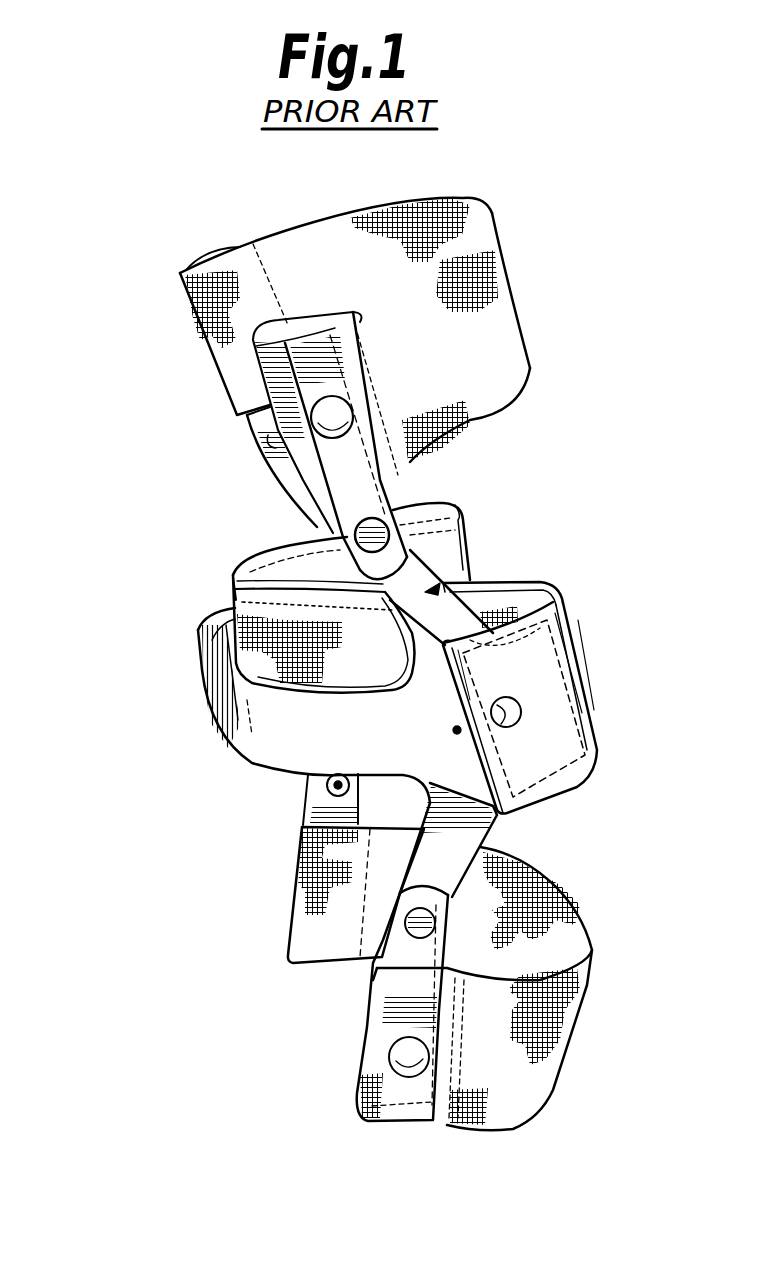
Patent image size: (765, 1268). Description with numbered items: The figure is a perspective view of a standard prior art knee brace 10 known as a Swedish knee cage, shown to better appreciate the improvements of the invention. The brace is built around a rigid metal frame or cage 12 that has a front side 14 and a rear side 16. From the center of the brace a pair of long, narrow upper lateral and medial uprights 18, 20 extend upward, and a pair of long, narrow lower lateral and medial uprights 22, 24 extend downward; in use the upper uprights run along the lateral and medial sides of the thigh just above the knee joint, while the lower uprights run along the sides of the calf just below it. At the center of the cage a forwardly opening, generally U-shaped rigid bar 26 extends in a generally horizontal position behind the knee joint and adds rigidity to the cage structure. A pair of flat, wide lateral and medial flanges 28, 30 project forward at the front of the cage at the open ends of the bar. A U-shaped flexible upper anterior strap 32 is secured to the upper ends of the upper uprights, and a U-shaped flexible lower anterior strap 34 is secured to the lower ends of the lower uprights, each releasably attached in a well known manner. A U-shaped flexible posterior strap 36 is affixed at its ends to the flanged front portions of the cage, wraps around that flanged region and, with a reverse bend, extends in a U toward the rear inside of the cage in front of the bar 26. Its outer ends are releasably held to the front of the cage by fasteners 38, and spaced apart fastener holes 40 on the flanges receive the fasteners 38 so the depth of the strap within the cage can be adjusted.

The knee brace 10 is at (552, 276).
The rigid metal frame or cage 12 is at (448, 582).
The front side 14 is at (606, 636).
The rear side 16 is at (176, 700).
The upper lateral upright 18 is at (396, 474).
The upper medial upright 20 is at (247, 414).
The lower lateral upright 22 is at (372, 1019).
The lower medial upright 24 is at (320, 800).
The U-shaped rigid bar 26 is at (232, 740).
The lateral flange 28 is at (588, 688).
The medial flange 30 is at (468, 541).
The upper anterior strap 32 is at (514, 314).
The lower anterior strap 34 is at (560, 1082).
The posterior strap 36 is at (235, 620).
The fasteners 38 is at (508, 697).
The fastener holes 40 is at (453, 731).